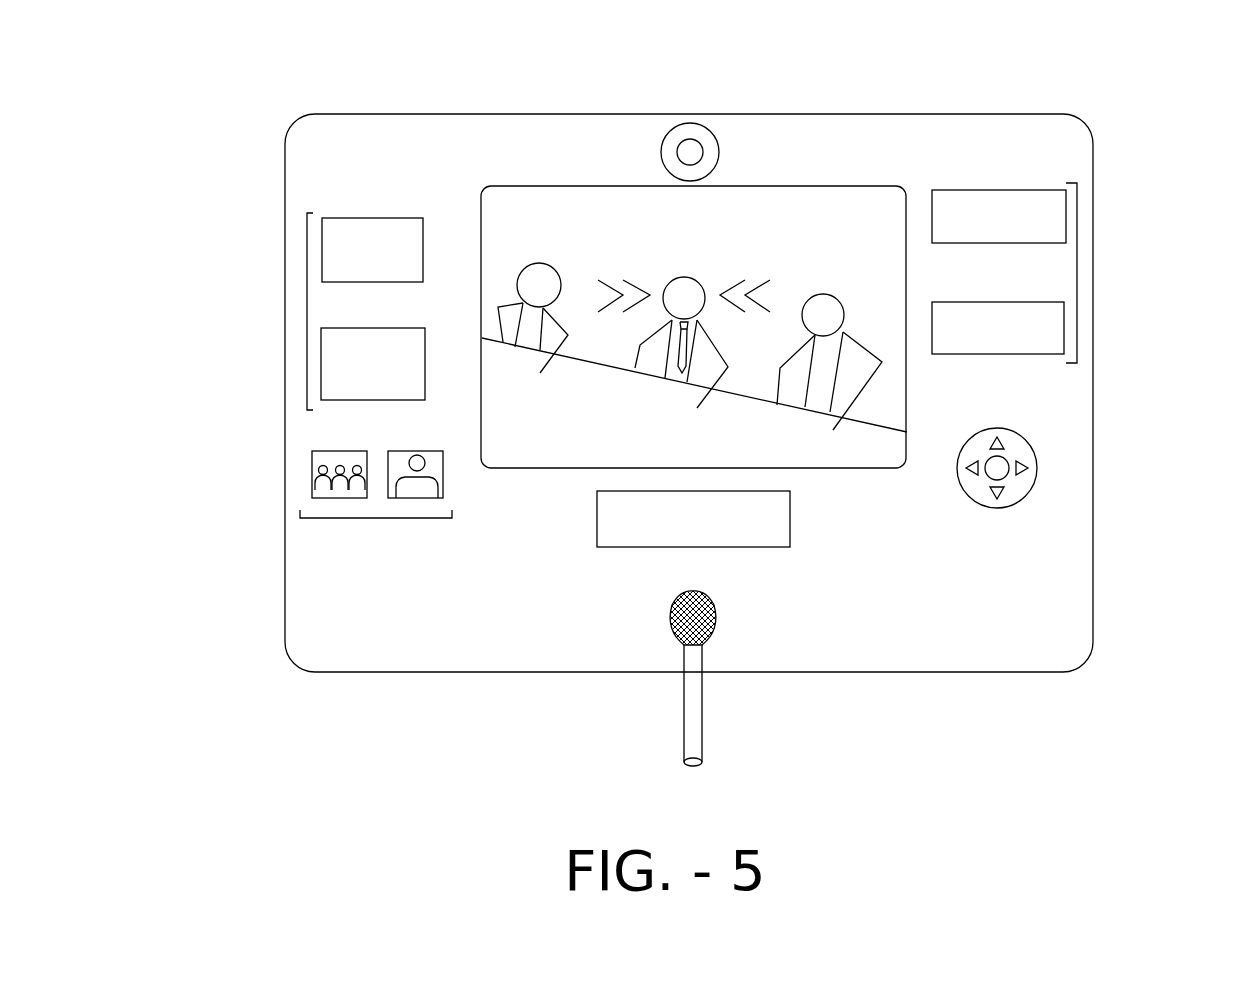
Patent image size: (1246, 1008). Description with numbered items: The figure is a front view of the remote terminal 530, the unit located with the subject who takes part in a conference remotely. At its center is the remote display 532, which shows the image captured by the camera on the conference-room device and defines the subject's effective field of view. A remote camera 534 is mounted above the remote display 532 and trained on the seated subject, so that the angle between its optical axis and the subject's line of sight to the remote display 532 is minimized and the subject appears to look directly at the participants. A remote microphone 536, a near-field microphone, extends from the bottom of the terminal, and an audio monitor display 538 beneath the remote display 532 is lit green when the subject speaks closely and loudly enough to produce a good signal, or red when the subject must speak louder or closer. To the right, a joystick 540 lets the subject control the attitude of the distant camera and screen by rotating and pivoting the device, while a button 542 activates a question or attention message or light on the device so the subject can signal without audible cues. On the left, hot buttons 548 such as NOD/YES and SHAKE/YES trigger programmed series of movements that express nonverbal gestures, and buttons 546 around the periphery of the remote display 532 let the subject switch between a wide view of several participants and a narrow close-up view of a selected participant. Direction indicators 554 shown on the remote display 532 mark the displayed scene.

The remote terminal 530 is at (255, 123).
The remote display 532 is at (535, 445).
The remote camera 534 is at (668, 130).
The remote microphone 536 is at (673, 615).
The audio monitor display 538 is at (772, 548).
The joystick 540 is at (1035, 450).
The button 542 is at (1077, 273).
The buttons 546 is at (378, 518).
The hot buttons 548 is at (307, 312).
The active speaker indicator 554 is at (758, 275).